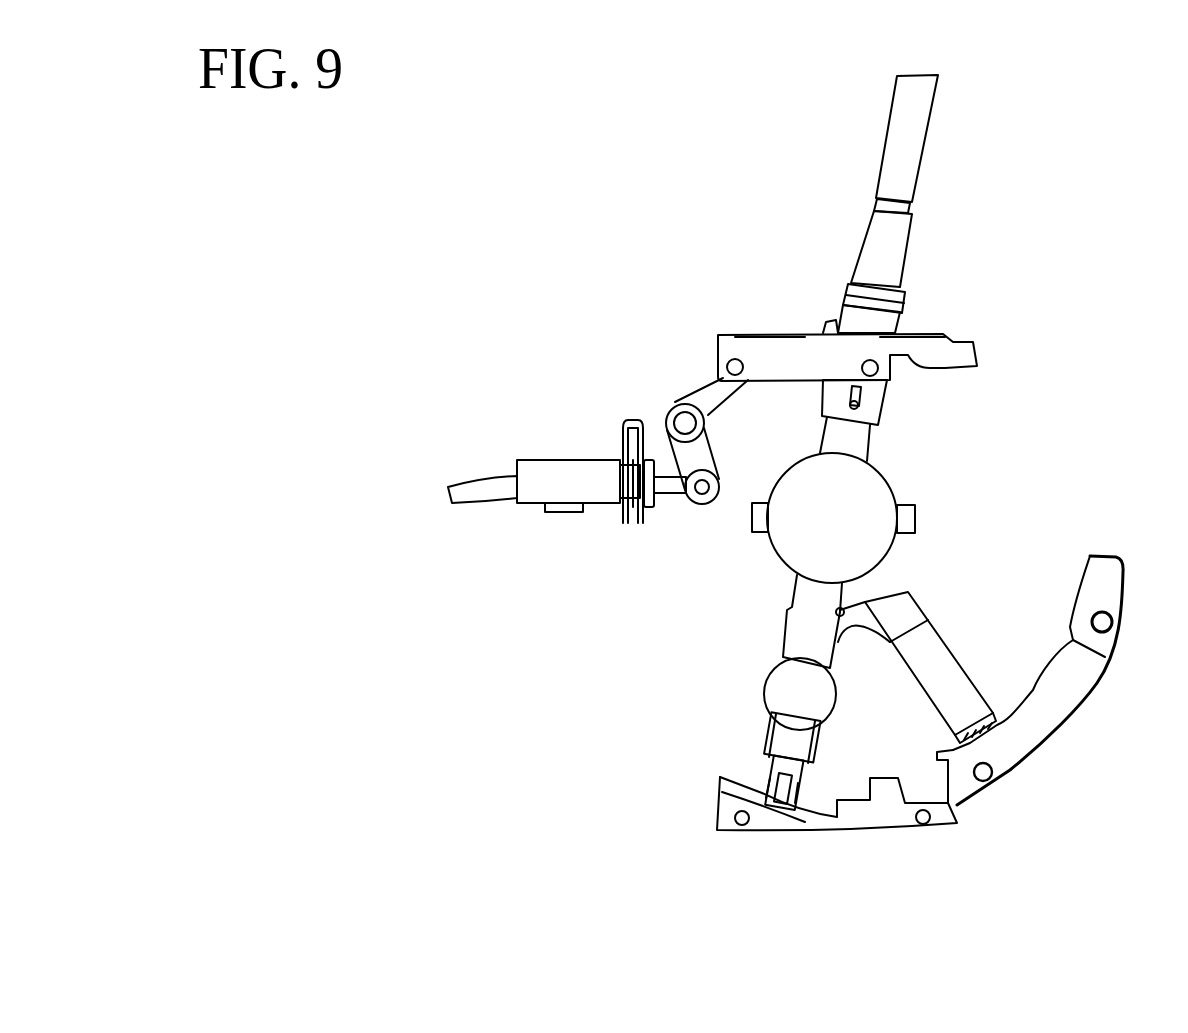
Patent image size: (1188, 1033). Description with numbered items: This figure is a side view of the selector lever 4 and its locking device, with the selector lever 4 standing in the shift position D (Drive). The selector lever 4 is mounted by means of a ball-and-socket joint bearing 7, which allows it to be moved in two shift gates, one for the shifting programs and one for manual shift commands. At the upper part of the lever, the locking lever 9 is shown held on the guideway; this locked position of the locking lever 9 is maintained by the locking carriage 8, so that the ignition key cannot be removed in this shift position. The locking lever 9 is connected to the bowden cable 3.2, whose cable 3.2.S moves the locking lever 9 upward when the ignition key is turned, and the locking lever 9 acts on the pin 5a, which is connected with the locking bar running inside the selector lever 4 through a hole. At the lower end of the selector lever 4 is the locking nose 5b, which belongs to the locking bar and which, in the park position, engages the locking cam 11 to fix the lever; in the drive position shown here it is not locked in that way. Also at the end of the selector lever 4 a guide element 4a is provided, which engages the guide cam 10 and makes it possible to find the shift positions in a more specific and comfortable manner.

The selector lever 4 is at (904, 143).
The locking carriage 8 is at (953, 356).
The pin 5a is at (856, 410).
The ball-and-socket joint bearing 7 is at (853, 504).
The locking lever 9 is at (717, 398).
The bowden cable 3.2 is at (478, 492).
The cable 3.2.S is at (673, 495).
The locking nose 5b is at (768, 783).
The guide element 4a is at (928, 674).
The locking cam 11 is at (873, 814).
The guide cam 10 is at (1064, 691).